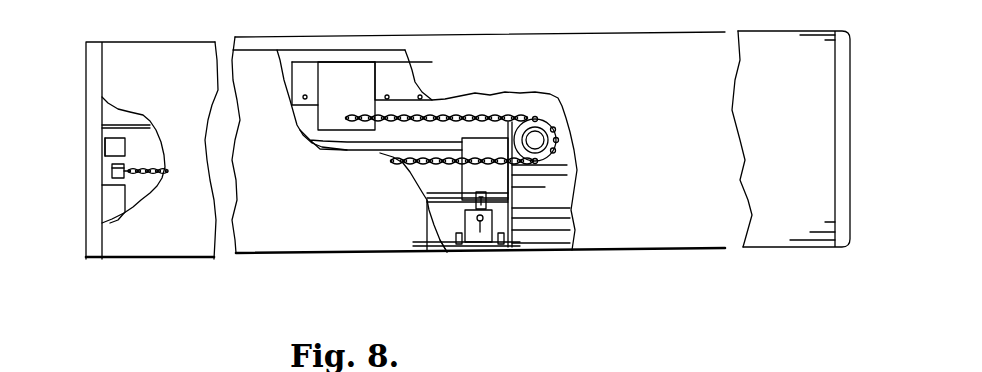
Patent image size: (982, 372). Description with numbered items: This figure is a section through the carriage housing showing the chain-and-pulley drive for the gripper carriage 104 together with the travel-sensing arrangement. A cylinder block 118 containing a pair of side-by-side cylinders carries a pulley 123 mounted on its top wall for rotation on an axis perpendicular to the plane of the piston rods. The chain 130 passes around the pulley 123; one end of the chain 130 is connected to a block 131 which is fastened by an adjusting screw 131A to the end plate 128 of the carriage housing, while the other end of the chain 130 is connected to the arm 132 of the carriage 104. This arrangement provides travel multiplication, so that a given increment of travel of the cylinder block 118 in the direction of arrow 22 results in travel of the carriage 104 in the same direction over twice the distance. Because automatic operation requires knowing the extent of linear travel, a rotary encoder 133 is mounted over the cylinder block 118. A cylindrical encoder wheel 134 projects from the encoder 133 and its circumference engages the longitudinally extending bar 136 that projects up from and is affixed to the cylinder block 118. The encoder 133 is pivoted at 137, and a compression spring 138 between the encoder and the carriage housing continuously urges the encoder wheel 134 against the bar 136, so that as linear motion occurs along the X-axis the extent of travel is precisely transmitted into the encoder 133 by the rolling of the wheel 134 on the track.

The arrow 22 is at (245, 301).
The gripper carriage 104 is at (358, 52).
The cylinder block 118 is at (447, 228).
The pulley 123 is at (547, 137).
The end plate 128 is at (100, 188).
The chain 130 is at (147, 174).
The block 131 is at (118, 166).
The adjusting screw 131A is at (112, 168).
The arm 132 is at (360, 103).
The rotary encoder 133 is at (471, 243).
The encoder wheel 134 is at (486, 200).
The bar 136 is at (442, 200).
The pivot 137 is at (458, 243).
The compression spring 138 is at (479, 222).